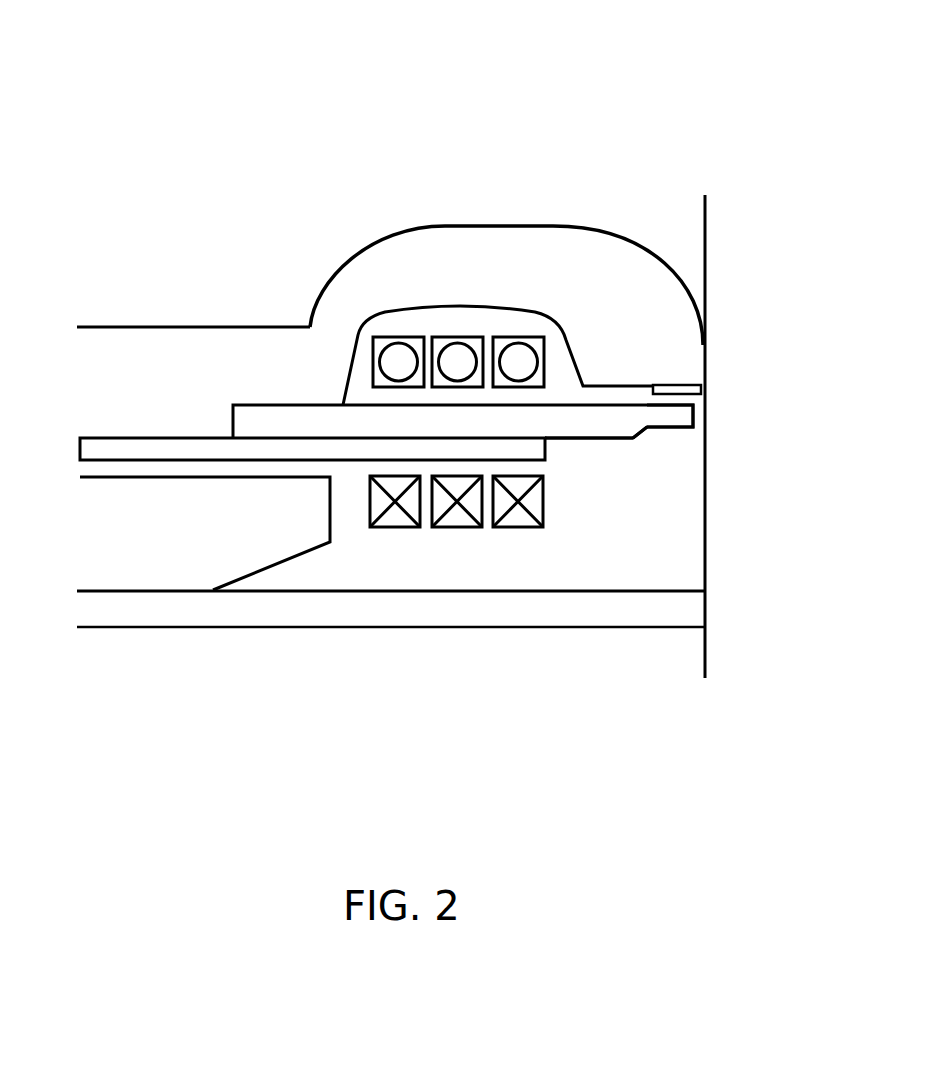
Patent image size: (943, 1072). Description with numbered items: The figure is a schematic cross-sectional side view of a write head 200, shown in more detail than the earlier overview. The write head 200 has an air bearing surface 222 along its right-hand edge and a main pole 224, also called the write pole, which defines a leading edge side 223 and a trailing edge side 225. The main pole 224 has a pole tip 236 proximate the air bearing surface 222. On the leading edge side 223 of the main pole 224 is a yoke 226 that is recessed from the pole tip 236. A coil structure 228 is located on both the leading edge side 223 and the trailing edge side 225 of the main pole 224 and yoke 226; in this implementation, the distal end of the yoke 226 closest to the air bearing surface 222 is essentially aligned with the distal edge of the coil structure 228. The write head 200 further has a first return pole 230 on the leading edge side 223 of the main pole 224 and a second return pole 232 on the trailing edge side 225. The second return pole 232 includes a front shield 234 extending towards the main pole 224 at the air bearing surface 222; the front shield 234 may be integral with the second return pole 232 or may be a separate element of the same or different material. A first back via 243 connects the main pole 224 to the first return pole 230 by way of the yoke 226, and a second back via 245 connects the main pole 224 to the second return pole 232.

The write head 200 is at (168, 73).
The air bearing surface 222 is at (705, 462).
The leading edge side 223 is at (588, 438).
The main pole 224 is at (578, 438).
The trailing edge side 225 is at (307, 404).
The yoke 226 is at (362, 462).
The coil structure 228 is at (518, 336).
The first return pole 230 is at (156, 618).
The second return pole 232 is at (221, 366).
The front shield 234 is at (673, 384).
The pole tip 236 is at (695, 410).
The first back via 243 is at (330, 505).
The second back via 245 is at (352, 348).